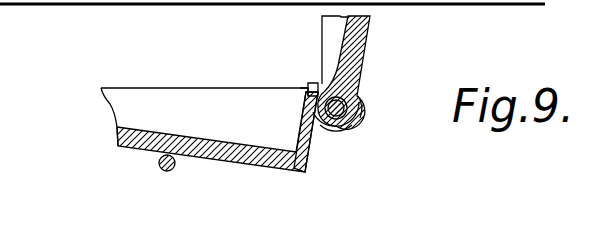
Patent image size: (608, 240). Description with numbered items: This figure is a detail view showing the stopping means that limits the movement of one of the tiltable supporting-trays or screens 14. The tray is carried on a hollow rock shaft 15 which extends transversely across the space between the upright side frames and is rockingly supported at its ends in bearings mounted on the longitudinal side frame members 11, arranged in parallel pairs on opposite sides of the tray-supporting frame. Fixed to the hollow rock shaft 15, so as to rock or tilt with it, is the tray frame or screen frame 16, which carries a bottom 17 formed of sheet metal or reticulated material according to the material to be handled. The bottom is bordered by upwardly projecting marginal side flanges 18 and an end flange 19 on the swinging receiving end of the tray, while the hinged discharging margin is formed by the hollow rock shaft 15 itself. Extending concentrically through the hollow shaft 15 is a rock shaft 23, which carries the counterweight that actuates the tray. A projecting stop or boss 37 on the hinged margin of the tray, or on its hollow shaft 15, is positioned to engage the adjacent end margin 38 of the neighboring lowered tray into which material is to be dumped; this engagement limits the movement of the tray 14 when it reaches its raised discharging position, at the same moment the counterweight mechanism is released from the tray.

The longitudinal side frame member 11 is at (13, 20).
The tiltable supporting-tray 14 is at (96, 89).
The marginal side flange 18 is at (326, 27).
The projecting stop 37 is at (311, 83).
The end margin 38 is at (311, 95).
The bottom 17 is at (253, 158).
The end flange 19 is at (312, 148).
The rock shaft 23 is at (358, 95).
The hollow rock shaft 15 is at (360, 110).
The tray frame 16 is at (352, 133).